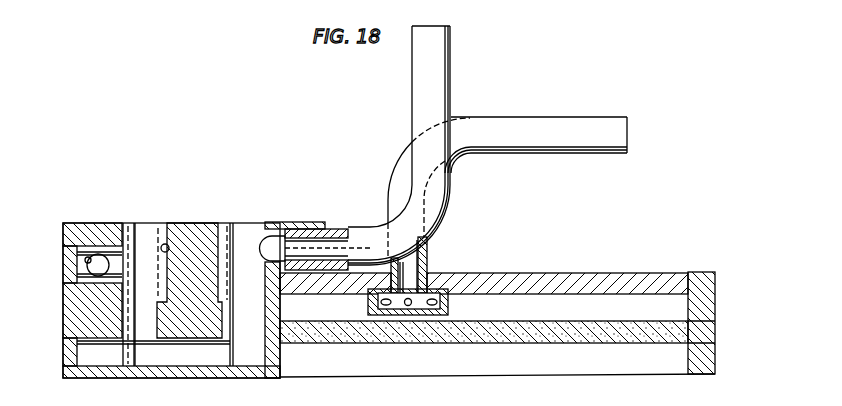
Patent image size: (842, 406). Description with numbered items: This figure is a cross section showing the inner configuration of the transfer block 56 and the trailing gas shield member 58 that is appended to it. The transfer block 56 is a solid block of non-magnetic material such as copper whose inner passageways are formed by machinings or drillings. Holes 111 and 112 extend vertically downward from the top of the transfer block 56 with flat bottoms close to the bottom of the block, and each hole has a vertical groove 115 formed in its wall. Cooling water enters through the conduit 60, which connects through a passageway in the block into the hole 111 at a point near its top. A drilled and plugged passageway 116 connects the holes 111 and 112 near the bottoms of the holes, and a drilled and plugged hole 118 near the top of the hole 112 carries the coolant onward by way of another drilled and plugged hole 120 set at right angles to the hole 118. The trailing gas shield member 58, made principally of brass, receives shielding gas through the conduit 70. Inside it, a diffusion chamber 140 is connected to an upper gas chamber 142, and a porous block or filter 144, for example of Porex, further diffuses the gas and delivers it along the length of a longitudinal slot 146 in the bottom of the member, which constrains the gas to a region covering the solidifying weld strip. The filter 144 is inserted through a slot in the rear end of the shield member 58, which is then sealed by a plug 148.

The transfer block 56 is at (96, 218).
The trailing gas shield member 58 is at (501, 321).
The conduit 60 is at (449, 71).
The conduit 70 is at (588, 120).
The hole 111 is at (249, 233).
The hole 112 is at (151, 230).
The vertical groove 115 is at (168, 247).
The passageway 116 is at (191, 357).
The hole 118 is at (123, 258).
The hole 120 is at (84, 257).
The diffusion chamber 140 is at (456, 283).
The upper gas chamber 142 is at (538, 302).
The porous block or filter 144 is at (609, 328).
The longitudinal slot 146 is at (544, 360).
The plug 148 is at (713, 333).